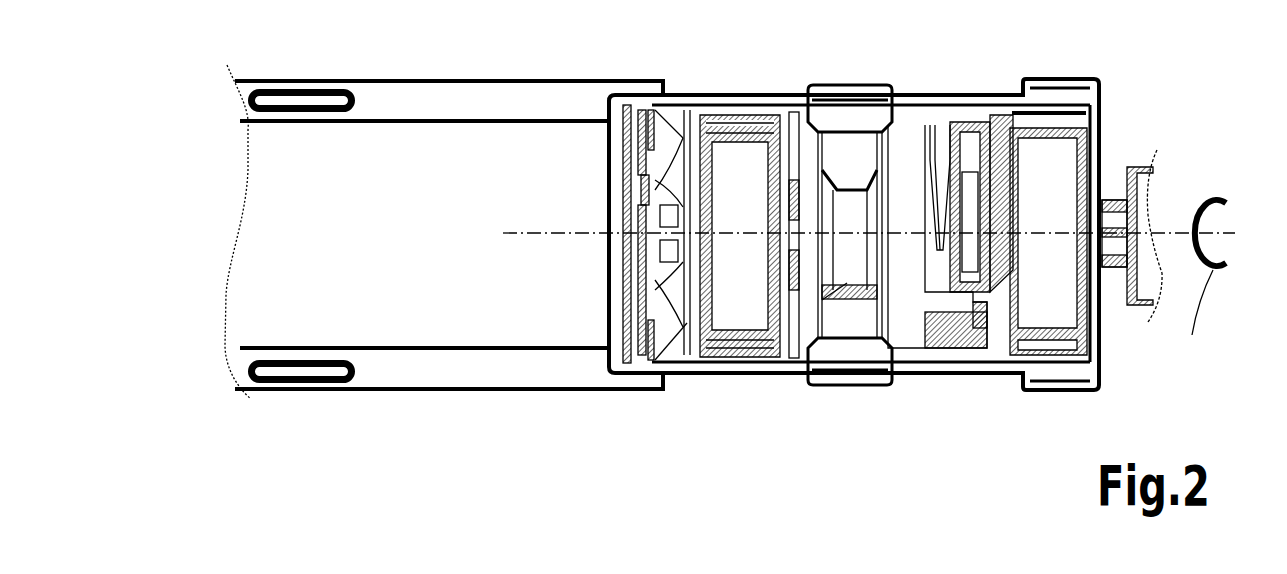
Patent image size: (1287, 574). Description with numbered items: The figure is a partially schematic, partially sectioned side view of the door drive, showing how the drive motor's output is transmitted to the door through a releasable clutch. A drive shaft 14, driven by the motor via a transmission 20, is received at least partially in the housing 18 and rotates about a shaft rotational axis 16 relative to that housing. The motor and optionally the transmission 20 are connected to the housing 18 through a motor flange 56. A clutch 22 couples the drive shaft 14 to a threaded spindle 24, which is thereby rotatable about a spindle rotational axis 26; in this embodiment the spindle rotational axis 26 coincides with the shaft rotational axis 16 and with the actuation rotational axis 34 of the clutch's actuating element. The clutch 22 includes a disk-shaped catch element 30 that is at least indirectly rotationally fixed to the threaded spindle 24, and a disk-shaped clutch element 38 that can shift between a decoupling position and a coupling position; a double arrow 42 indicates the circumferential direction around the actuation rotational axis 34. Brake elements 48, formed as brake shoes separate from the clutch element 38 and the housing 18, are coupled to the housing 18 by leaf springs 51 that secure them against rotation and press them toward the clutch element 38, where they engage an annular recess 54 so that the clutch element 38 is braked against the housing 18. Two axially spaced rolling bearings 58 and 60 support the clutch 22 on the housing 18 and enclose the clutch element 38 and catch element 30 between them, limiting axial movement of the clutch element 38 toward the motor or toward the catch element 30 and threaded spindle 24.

The drive shaft 14 is at (667, 190).
The shaft rotational axis 16 is at (1204, 218).
The housing 18 is at (430, 100).
The transmission 20 is at (512, 150).
The clutch 22 is at (955, 150).
The threaded spindle 24 is at (1110, 182).
The spindle rotational axis 26 is at (1204, 218).
The catch element 30 is at (1000, 160).
The actuation rotational axis 34 is at (1197, 200).
The clutch element 38 is at (903, 145).
The double arrow 42 is at (1201, 284).
The brake elements 48 is at (848, 95).
The spring 51 is at (740, 93).
The recess 54 is at (847, 248).
The motor flange 56 is at (630, 362).
The bearing 58 is at (740, 318).
The bearing 60 is at (1073, 322).